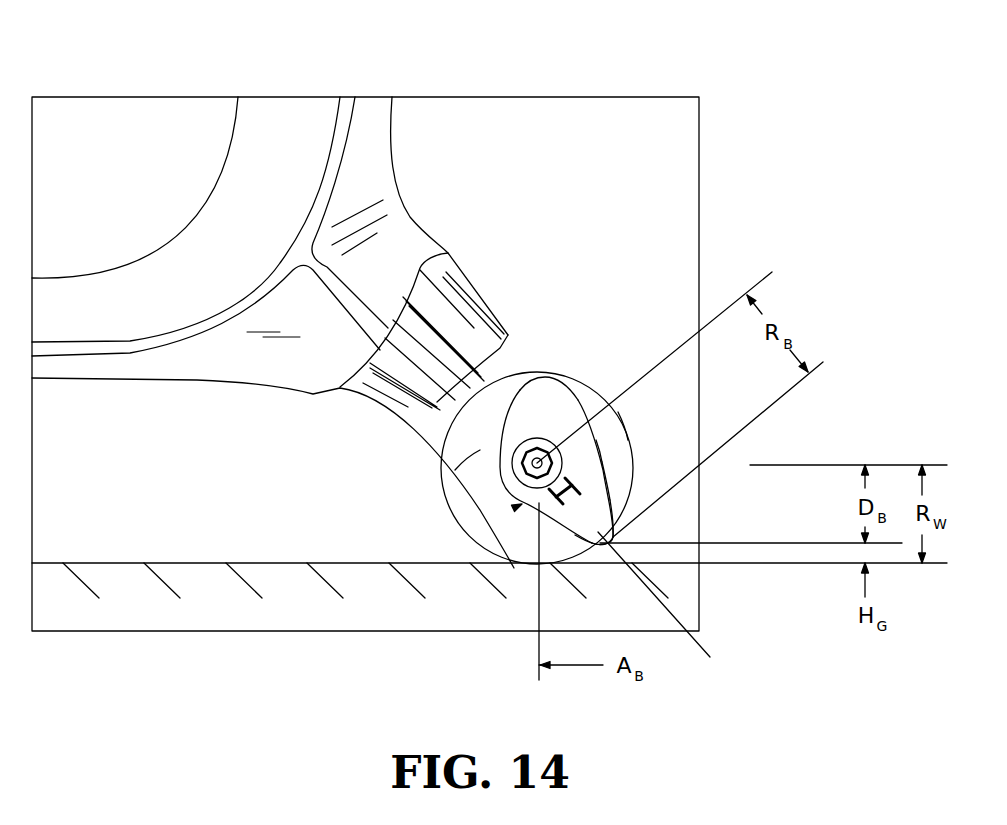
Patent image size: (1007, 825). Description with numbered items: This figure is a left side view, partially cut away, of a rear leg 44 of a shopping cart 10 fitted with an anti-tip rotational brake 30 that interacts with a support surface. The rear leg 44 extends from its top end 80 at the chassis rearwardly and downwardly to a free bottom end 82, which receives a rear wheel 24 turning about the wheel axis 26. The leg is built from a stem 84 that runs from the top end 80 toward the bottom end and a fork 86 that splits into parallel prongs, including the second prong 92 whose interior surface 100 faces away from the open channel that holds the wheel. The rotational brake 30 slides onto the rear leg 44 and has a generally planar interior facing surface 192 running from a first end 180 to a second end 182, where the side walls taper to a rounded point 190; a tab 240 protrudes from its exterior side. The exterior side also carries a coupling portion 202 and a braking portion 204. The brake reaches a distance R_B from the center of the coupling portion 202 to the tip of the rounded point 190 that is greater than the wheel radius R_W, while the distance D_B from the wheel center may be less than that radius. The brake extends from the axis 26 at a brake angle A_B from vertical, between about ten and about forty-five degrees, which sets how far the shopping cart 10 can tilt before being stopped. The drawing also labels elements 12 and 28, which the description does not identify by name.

The shopping cart 10 is at (118, 72).
The rim 12 is at (85, 320).
The rear wheel 24 is at (613, 422).
The wheel axis 26 is at (600, 452).
The inner layer 28 is at (618, 523).
The rotational brake 30 is at (522, 506).
The rear leg 44 is at (393, 229).
The top end 80 is at (357, 237).
The bottom end 82 is at (600, 463).
The stem 84 is at (460, 310).
The fork 86 is at (571, 425).
The second prong 92 is at (477, 462).
The interior surface 100 is at (552, 437).
The first end 180 is at (541, 395).
The second end 182 is at (620, 527).
The rounded point 190 is at (620, 532).
The interior facing surface 192 is at (604, 406).
The coupling portion 202 is at (514, 507).
The braking portion 204 is at (567, 523).
The tab 240 is at (613, 507).